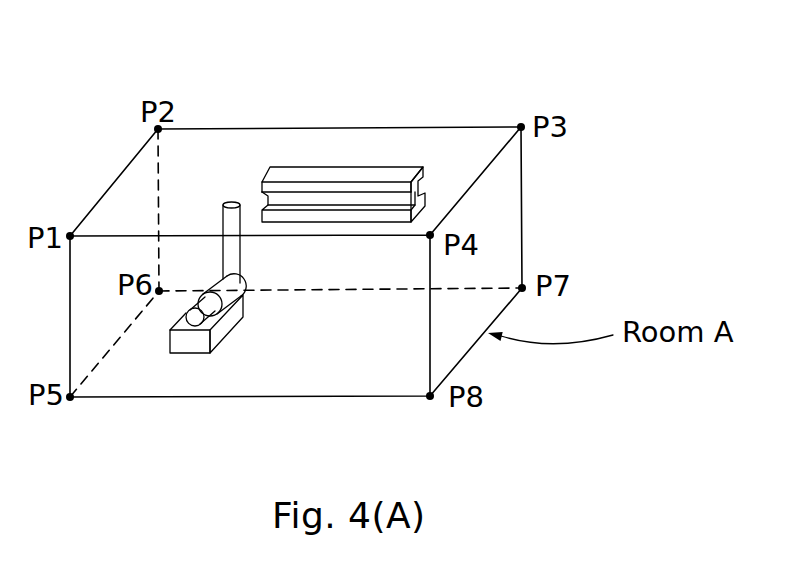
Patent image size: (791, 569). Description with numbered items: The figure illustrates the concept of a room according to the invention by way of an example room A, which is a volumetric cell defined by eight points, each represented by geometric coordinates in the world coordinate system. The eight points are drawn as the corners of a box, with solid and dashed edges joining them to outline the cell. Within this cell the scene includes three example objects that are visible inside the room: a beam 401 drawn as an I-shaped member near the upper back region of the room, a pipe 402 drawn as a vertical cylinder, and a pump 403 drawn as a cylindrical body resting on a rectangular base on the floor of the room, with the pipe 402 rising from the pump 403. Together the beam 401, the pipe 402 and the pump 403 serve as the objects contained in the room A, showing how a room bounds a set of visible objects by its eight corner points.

The beam 401 is at (398, 146).
The pipe 402 is at (227, 187).
The pump 403 is at (237, 357).